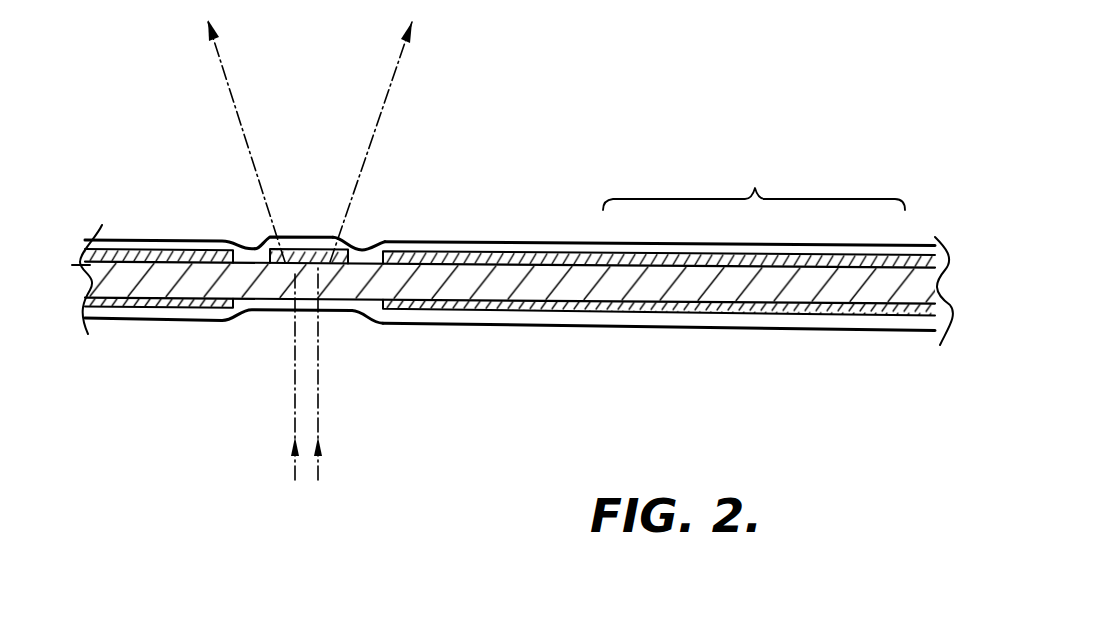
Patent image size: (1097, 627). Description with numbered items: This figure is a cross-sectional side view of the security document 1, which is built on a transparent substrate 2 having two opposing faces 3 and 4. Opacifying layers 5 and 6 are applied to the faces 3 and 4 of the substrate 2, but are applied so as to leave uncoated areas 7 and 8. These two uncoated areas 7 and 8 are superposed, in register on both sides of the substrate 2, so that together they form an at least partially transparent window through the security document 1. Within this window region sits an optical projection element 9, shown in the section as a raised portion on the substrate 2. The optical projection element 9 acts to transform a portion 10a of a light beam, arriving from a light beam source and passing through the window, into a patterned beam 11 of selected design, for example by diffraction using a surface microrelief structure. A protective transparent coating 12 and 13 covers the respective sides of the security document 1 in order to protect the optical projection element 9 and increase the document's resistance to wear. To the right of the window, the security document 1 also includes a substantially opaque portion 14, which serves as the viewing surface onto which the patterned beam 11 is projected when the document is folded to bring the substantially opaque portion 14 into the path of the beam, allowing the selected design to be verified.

The security document 1 is at (542, 110).
The substrate 2 is at (712, 285).
The face of the substrate 3 is at (630, 268).
The face of the substrate 4 is at (615, 308).
The opacifying layer 5 is at (477, 258).
The opacifying layer 6 is at (493, 310).
The uncoated area 7 is at (369, 236).
The uncoated area 8 is at (357, 322).
The optical projection element 9 is at (264, 238).
The portion of a light beam 10a is at (308, 460).
The patterned beam 11 is at (280, 89).
The protective transparent coating 12 is at (549, 243).
The protective transparent coating 13 is at (547, 327).
The substantially opaque portion 14 is at (754, 179).